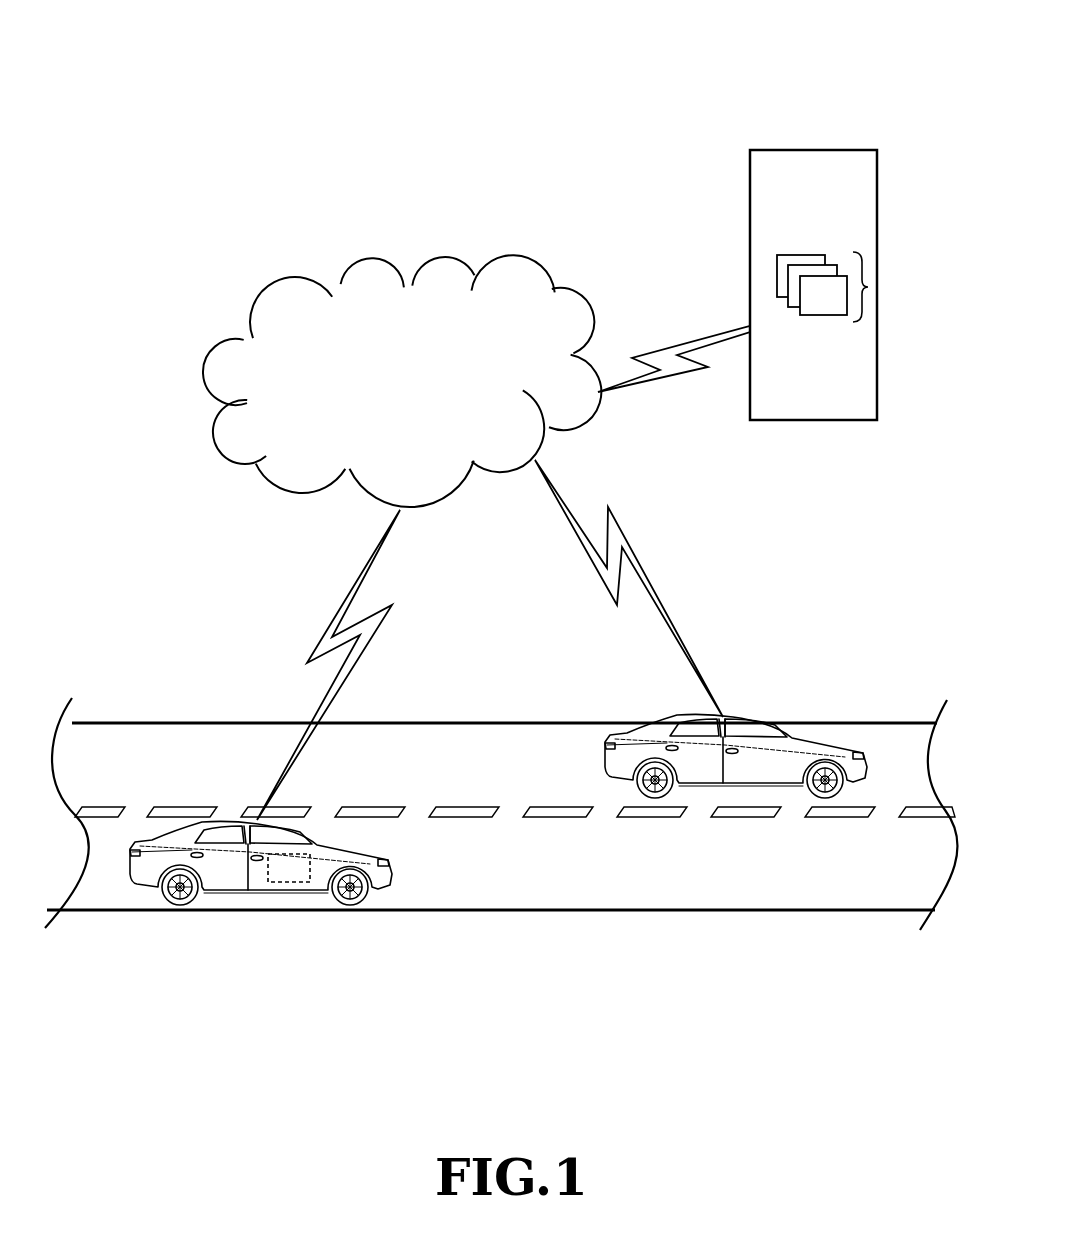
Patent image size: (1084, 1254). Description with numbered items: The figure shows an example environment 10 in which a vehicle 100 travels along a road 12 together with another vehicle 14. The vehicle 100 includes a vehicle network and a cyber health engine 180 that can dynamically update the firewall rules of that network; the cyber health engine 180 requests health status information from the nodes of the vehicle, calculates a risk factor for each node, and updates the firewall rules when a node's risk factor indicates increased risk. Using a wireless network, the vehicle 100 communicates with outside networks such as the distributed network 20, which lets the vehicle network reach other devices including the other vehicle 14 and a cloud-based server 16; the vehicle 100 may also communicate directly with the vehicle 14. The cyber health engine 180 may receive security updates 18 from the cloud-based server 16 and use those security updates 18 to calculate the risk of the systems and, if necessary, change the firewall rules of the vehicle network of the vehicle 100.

The environment 10 is at (760, 82).
The road 12 is at (500, 888).
The vehicle 14 is at (777, 752).
The cloud-based server 16 is at (853, 213).
The security updates 18 is at (868, 287).
The distributed network 20 is at (483, 282).
The vehicle 100 is at (222, 818).
The cyber health engine 180 is at (290, 890).